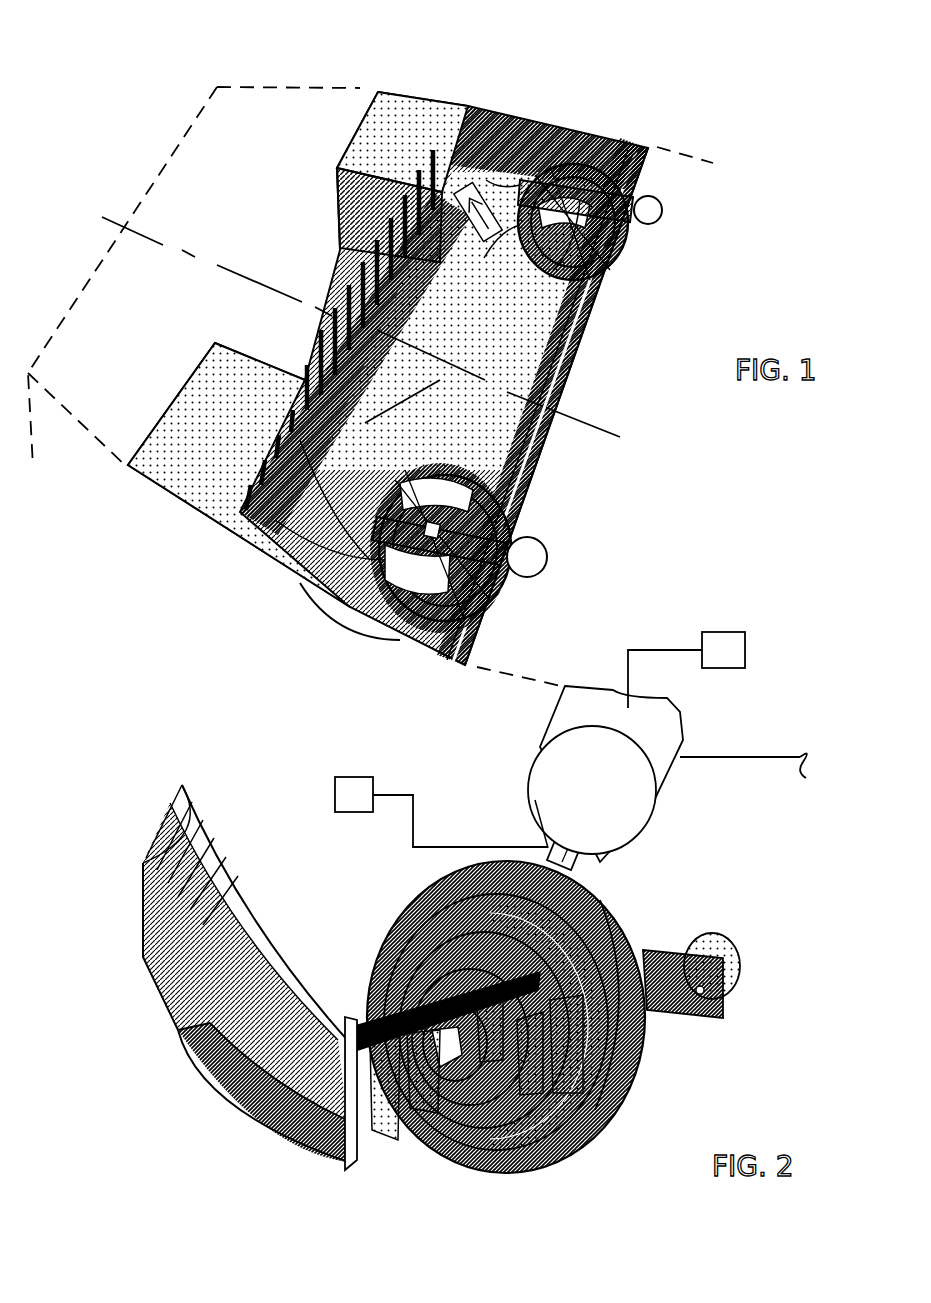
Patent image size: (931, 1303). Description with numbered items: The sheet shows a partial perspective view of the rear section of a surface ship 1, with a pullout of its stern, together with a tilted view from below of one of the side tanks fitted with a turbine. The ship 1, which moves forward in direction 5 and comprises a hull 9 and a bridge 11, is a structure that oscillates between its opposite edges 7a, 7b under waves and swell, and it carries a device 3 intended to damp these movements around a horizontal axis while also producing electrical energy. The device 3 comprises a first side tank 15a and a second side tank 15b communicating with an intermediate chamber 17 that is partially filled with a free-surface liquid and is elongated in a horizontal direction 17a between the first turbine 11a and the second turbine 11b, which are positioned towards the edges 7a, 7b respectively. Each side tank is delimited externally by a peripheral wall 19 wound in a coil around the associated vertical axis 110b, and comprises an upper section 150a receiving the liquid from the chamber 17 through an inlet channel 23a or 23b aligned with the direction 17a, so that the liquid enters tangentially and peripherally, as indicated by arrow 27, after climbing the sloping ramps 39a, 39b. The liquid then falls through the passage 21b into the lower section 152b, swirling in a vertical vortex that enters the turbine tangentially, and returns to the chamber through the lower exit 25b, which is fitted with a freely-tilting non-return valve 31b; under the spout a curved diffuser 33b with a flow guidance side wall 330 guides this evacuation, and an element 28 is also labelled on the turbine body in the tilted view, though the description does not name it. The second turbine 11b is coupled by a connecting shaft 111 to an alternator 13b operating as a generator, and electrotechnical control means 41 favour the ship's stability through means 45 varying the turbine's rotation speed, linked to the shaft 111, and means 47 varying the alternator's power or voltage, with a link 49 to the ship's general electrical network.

In FIG. 1, the surface ship 1 is at (757, 165).
In FIG. 1, the device 3 is at (541, 95).
In FIG. 1, the forward direction 5 is at (693, 470).
In FIG. 1, the first edge 7a is at (293, 590).
In FIG. 1, the second edge 7b is at (365, 88).
In FIG. 1, the hull 9 is at (83, 457).
In FIG. 1, the bridge 11 is at (177, 175).
In FIG. 1, the first turbine 11a is at (493, 590).
In FIG. 1, the second turbine 11b is at (583, 195).
In FIG. 2, the second turbine 11b is at (467, 1127).
In FIG. 2, the alternator 13b is at (665, 735).
In FIG. 1, the first side tank 15a is at (275, 520).
In FIG. 1, the second side tank 15b is at (486, 172).
In FIG. 1, the intermediate chamber 17 is at (415, 300).
In FIG. 1, the elongation direction 17a is at (507, 337).
In FIG. 1, the peripheral wall 19 is at (563, 165).
In FIG. 2, the passage 21b is at (403, 1153).
In FIG. 1, the liquid entry 23a is at (352, 503).
In FIG. 1, the liquid entry 23b is at (433, 262).
In FIG. 2, the liquid entry 23b is at (246, 952).
In FIG. 2, the liquid exit 25b is at (392, 975).
In FIG. 1, the arrow 27 is at (460, 203).
In FIG. 2, the drum body 28 is at (580, 1137).
In FIG. 1, the non-return valve 31b is at (553, 270).
In FIG. 2, the non-return valve 31b is at (363, 1020).
In FIG. 2, the curved diffuser 33b is at (292, 1140).
In FIG. 1, the sloping ramp 39a is at (300, 583).
In FIG. 1, the sloping ramp 39b is at (484, 258).
In FIG. 2, the sloping ramp 39b is at (182, 1030).
In FIG. 2, the electrotechnical control means 41 is at (473, 712).
In FIG. 2, the speed variation means 45 is at (343, 798).
In FIG. 2, the power variation means 47 is at (723, 643).
In FIG. 2, the link 49 is at (777, 760).
In FIG. 2, the vertical axis 110b is at (535, 800).
In FIG. 2, the connecting shaft 111 is at (657, 800).
In FIG. 1, the upper section 150a is at (520, 518).
In FIG. 2, the lower section 152b is at (543, 1160).
In FIG. 2, the flow guidance side wall 330 is at (620, 1053).